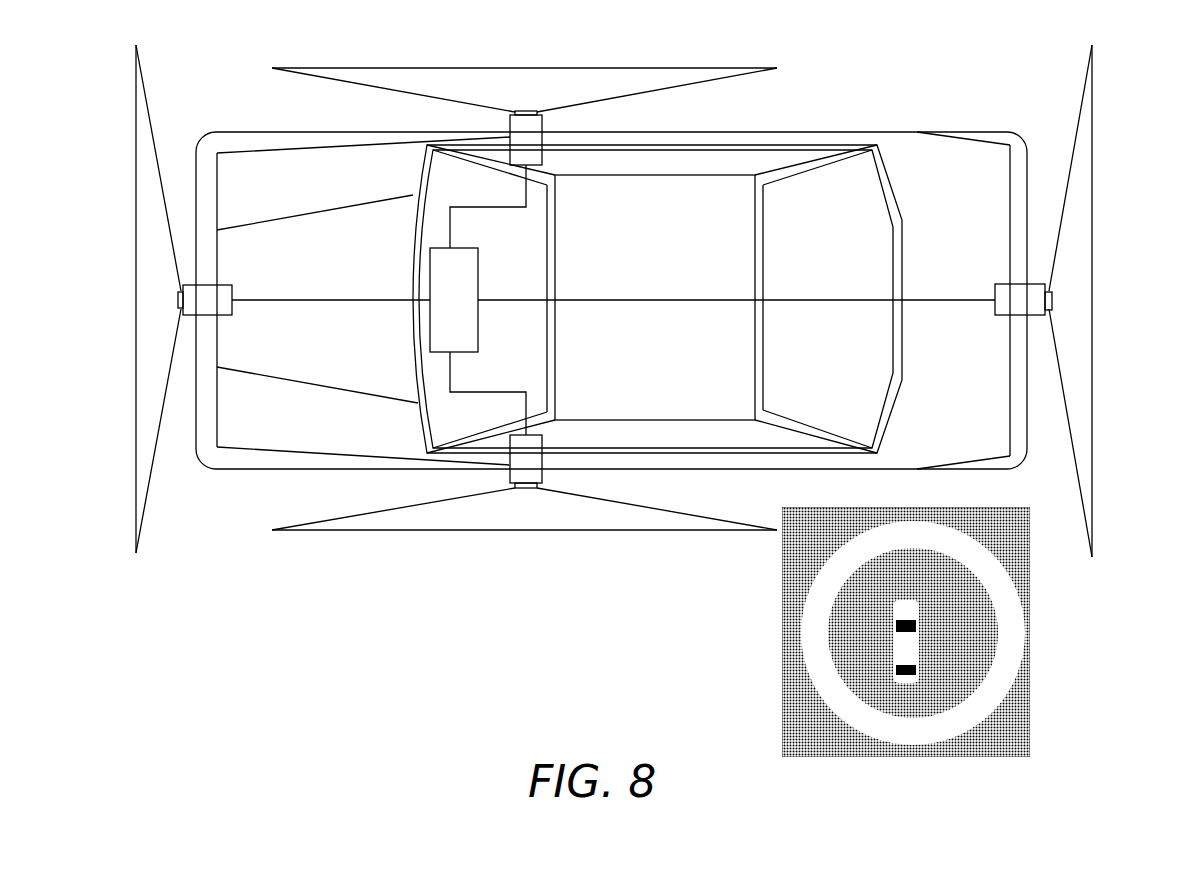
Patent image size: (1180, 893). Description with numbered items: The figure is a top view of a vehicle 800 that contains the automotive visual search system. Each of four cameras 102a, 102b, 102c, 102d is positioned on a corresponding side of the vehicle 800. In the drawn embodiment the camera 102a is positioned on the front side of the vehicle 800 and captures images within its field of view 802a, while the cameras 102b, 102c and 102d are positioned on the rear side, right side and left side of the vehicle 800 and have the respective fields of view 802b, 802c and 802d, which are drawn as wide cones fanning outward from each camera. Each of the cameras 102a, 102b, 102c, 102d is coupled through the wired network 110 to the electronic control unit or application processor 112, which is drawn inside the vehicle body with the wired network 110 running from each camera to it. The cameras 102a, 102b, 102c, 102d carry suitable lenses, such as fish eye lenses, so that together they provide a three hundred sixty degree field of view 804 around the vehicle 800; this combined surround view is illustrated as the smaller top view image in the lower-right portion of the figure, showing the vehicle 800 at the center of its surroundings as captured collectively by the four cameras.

The vehicle 800 is at (890, 79).
The field of view of camera 802a is at (136, 212).
The field of view of camera 802b is at (1092, 222).
The field of view of camera 802c is at (526, 67).
The field of view of camera 802d is at (526, 532).
The camera 102a is at (183, 285).
The camera 102b is at (1045, 284).
The camera 102c is at (542, 125).
The camera 102d is at (542, 477).
The wired network 110 is at (309, 298).
The electronic control unit (ECU) or application processor 112 is at (470, 345).
The 360 degree field of view 804 is at (782, 630).